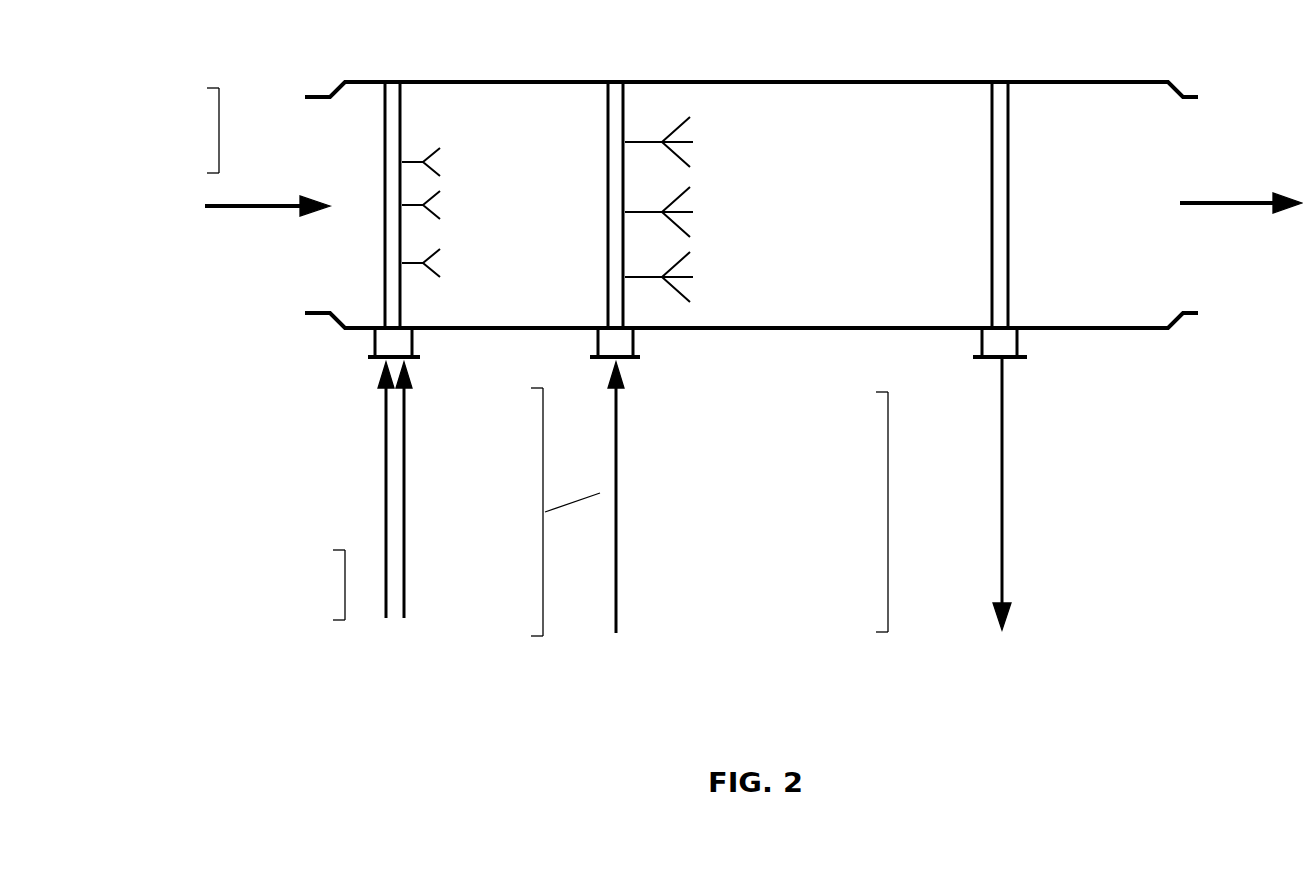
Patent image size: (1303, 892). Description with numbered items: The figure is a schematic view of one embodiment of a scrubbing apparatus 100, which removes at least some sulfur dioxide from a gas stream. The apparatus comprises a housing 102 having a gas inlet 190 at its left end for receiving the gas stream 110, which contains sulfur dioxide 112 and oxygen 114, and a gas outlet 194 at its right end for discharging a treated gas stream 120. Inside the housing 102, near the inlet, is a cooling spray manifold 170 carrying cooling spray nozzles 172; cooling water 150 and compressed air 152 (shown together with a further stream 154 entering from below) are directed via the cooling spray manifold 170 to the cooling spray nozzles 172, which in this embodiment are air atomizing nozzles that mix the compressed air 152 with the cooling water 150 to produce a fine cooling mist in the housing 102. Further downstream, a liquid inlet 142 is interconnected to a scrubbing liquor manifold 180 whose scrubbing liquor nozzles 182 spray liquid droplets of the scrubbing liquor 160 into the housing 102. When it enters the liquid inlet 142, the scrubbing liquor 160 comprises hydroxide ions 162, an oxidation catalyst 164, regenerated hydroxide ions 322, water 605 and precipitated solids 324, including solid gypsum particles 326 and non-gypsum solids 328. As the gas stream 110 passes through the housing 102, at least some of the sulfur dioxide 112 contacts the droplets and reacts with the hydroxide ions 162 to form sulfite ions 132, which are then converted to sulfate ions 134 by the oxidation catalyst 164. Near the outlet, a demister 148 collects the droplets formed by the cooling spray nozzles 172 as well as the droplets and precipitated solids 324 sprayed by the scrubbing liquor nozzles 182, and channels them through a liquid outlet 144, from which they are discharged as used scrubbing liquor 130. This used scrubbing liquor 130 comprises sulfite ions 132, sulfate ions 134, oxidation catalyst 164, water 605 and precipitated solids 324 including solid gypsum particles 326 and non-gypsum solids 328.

The scrubbing apparatus 100 is at (751, 259).
The housing 102 is at (820, 80).
The gas stream 110 is at (267, 221).
The sulfur dioxide 112 is at (268, 190).
The oxygen 114 is at (191, 152).
The treated gas stream 120 is at (1241, 192).
The used scrubbing liquor 130 is at (1025, 493).
The sulfite ions 132 is at (985, 440).
The sulfate ions 134 is at (857, 444).
The liquid inlet 142 is at (590, 341).
The liquid outlet 144 is at (973, 341).
The demister 148 is at (1013, 105).
The cooling water 150 is at (365, 490).
The compressed air 152 is at (345, 563).
The feed component 154 is at (319, 602).
The scrubbing liquor 160 is at (640, 497).
The hydroxide ions 162 is at (517, 408).
The oxidation catalyst 164 is at (690, 459).
The cooling spray manifold 170 is at (398, 98).
The cooling spray nozzles 172 is at (443, 213).
The scrubbing liquor manifold 180 is at (617, 98).
The scrubbing liquor nozzles 182 is at (684, 209).
The gas inlet 190 is at (315, 90).
The gas outlet 194 is at (1182, 83).
The regenerated hydroxide ions 322 is at (517, 476).
The precipitated solids 324 is at (690, 510).
The solid gypsum particles 326 is at (690, 544).
The non-gypsum solids 328 is at (690, 578).
The water 605 is at (690, 615).